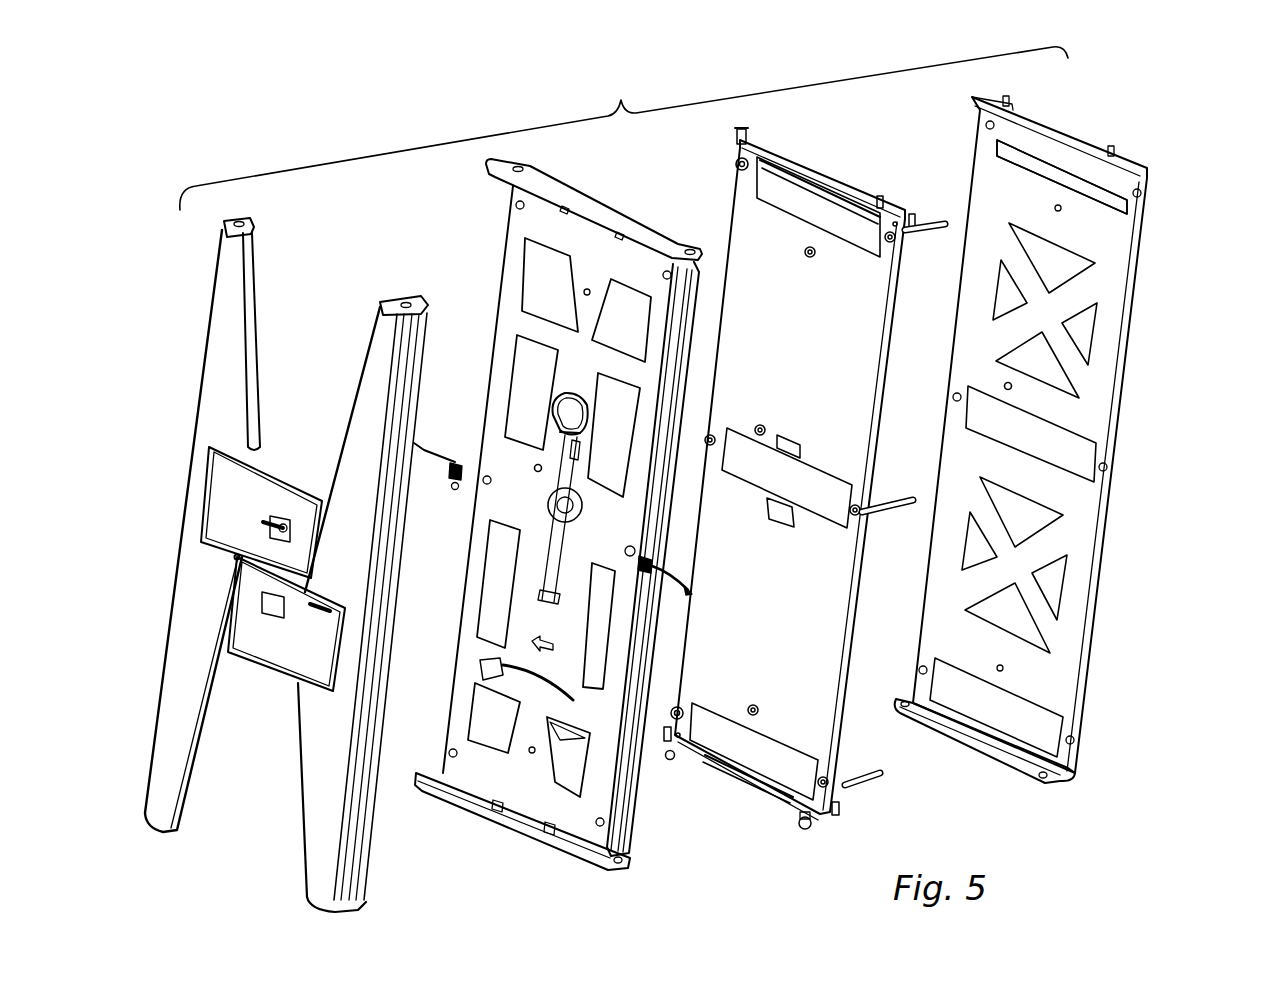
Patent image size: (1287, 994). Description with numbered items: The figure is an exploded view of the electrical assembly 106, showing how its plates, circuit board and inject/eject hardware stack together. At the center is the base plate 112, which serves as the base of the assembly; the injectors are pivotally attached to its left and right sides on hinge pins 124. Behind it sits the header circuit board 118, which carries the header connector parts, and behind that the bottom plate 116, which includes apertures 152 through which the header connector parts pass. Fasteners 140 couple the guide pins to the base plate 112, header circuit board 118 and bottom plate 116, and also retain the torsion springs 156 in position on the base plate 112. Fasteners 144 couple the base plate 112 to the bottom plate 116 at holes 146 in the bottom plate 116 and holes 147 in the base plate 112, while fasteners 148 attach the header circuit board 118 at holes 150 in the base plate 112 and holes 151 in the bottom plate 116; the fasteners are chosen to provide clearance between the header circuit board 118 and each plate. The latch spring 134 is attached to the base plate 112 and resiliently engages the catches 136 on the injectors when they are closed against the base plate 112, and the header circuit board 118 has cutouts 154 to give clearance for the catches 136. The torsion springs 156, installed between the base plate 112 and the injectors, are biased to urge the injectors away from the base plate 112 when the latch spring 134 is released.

The electrical assembly 106 is at (620, 104).
The base plate 112 is at (522, 228).
The bottom plate 116 is at (1128, 289).
The header circuit board 118 is at (745, 220).
The hinge pins 124 is at (736, 140).
The latch spring 134 is at (565, 398).
The catches 136 is at (280, 530).
The fasteners 140 is at (736, 167).
The fasteners 144 is at (760, 424).
The holes 146 is at (1004, 386).
The holes 147 is at (534, 467).
The fasteners 148 is at (805, 830).
The holes 150 is at (577, 860).
The holes 151 is at (1040, 783).
The apertures 152 is at (1107, 187).
The cutouts 154 is at (797, 432).
The torsion springs 156 is at (431, 458).